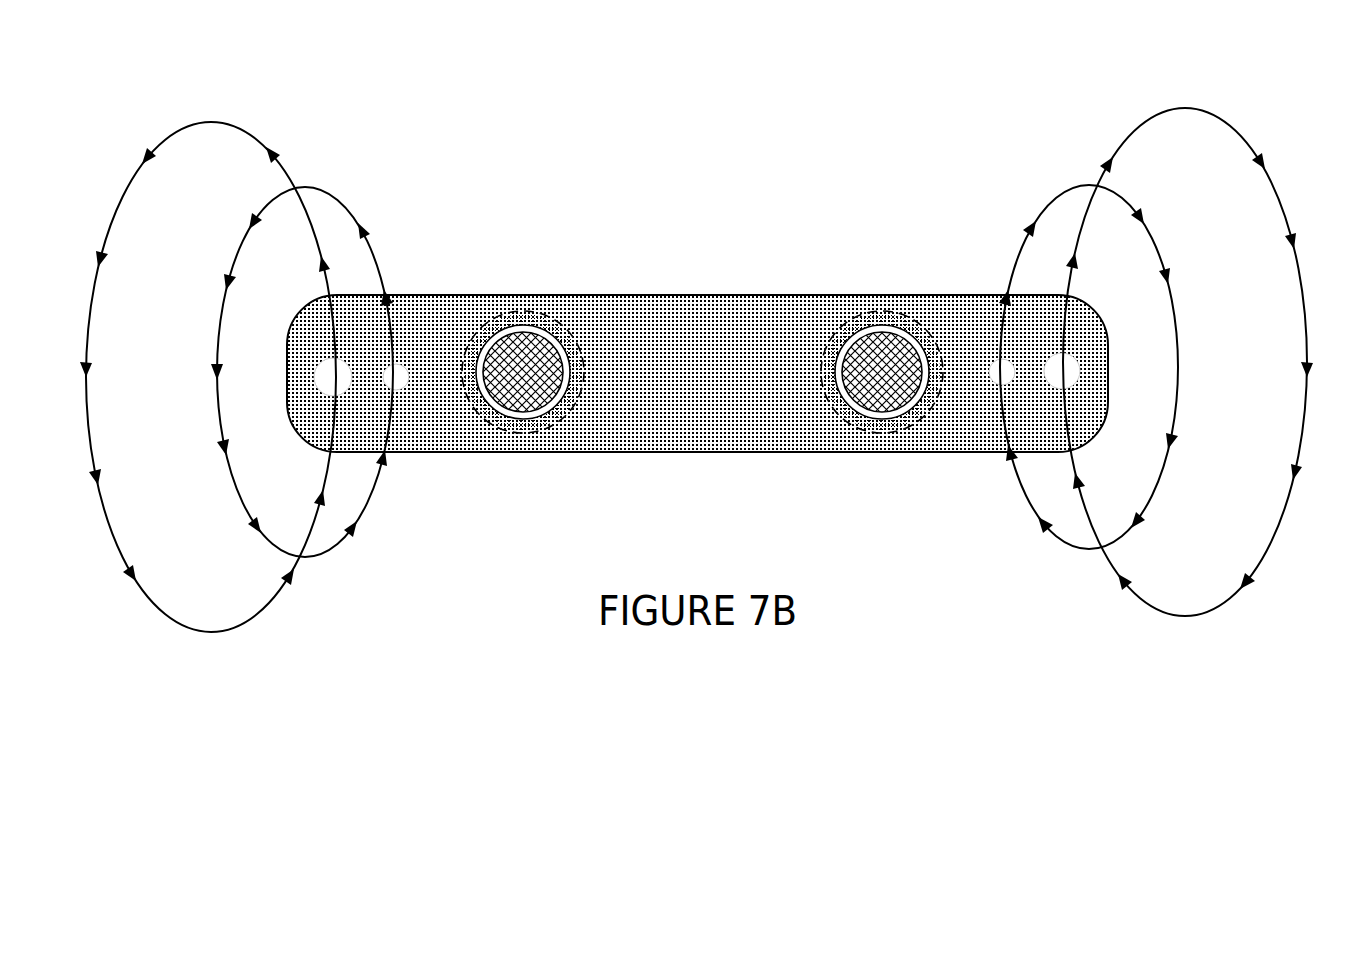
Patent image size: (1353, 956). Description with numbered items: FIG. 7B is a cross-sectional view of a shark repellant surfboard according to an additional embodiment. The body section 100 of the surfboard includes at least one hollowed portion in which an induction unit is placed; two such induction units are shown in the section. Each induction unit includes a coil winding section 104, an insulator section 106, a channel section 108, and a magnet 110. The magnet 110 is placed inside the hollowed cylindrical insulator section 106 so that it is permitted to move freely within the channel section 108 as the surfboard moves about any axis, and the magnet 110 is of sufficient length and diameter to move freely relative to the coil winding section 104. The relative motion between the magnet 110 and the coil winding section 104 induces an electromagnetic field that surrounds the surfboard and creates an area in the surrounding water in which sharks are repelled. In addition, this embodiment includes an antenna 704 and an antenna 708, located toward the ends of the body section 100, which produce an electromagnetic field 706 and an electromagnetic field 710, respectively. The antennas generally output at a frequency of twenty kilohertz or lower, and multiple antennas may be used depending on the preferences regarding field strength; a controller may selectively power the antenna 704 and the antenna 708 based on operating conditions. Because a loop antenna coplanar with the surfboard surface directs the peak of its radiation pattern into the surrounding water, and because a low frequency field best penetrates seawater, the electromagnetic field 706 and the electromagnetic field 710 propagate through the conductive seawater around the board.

The body section 100 is at (728, 295).
The coil winding section 104 is at (580, 398).
The insulator section 106 is at (578, 343).
The channel section 108 is at (481, 393).
The magnet 110 is at (487, 360).
The antenna 704 is at (320, 362).
The electromagnetic field 706 is at (227, 122).
The antenna 708 is at (396, 365).
The electromagnetic field 710 is at (348, 203).